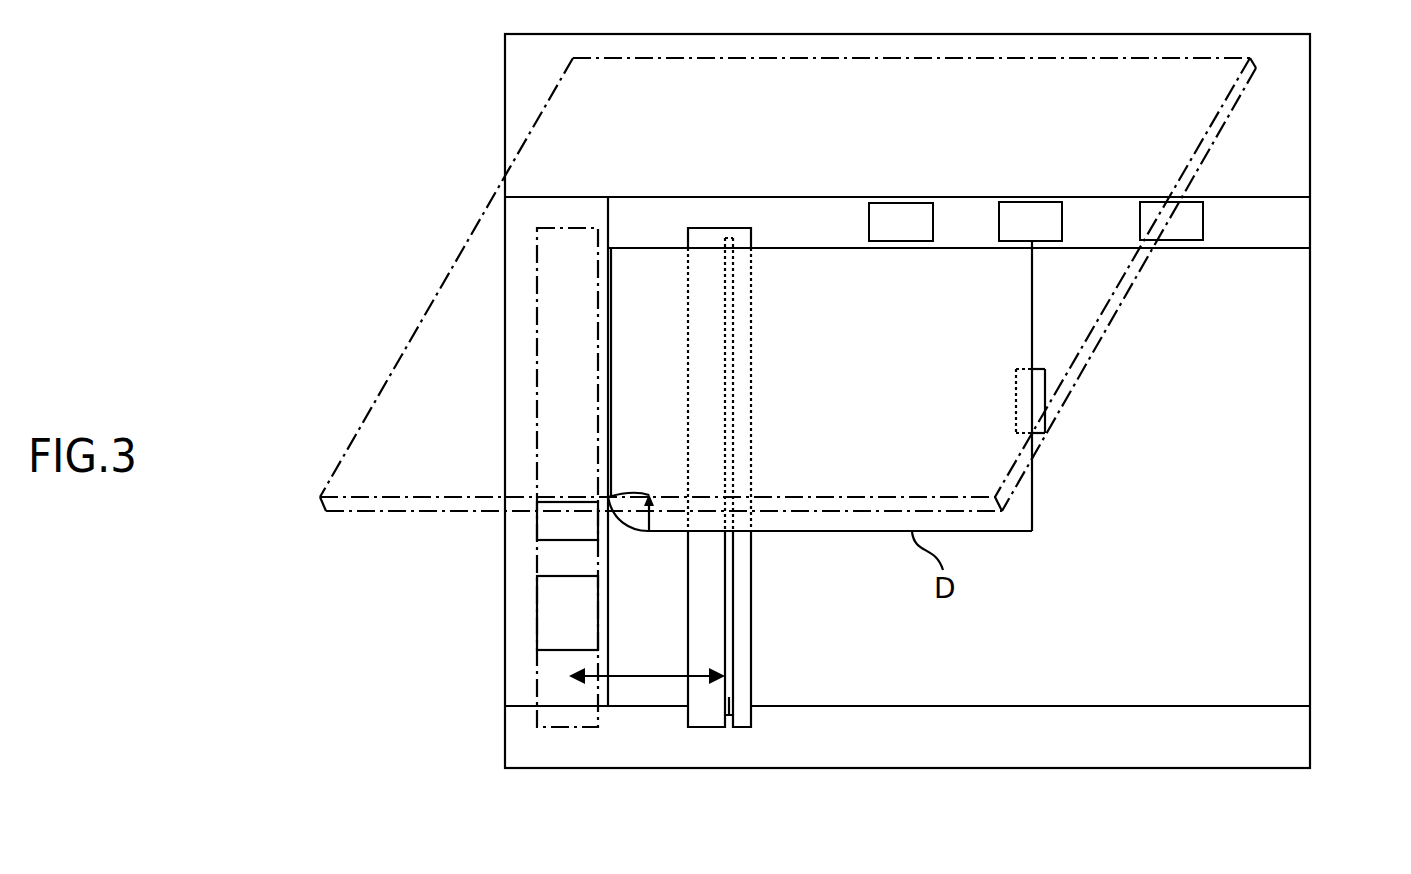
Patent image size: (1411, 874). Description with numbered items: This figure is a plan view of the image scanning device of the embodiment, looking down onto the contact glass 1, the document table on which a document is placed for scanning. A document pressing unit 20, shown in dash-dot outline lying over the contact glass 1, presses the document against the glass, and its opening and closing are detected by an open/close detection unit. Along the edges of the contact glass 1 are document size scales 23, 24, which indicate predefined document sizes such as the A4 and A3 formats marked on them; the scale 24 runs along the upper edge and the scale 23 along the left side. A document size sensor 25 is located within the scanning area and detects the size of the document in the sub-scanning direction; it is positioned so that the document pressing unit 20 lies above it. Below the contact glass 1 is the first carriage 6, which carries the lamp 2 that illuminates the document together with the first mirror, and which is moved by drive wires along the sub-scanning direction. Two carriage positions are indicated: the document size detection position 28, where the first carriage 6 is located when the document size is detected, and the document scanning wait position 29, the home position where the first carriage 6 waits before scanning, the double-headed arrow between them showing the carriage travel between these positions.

The contact glass 1 is at (1293, 488).
The lamp 2 is at (732, 715).
The first carriage 6 is at (700, 716).
The document pressing unit 20 is at (437, 323).
The document size scale 23 is at (558, 652).
The document size scale 24 is at (1297, 217).
The document size sensor 25 is at (1047, 387).
The document size detection position 28 is at (720, 727).
The document scanning wait position 29 is at (566, 730).